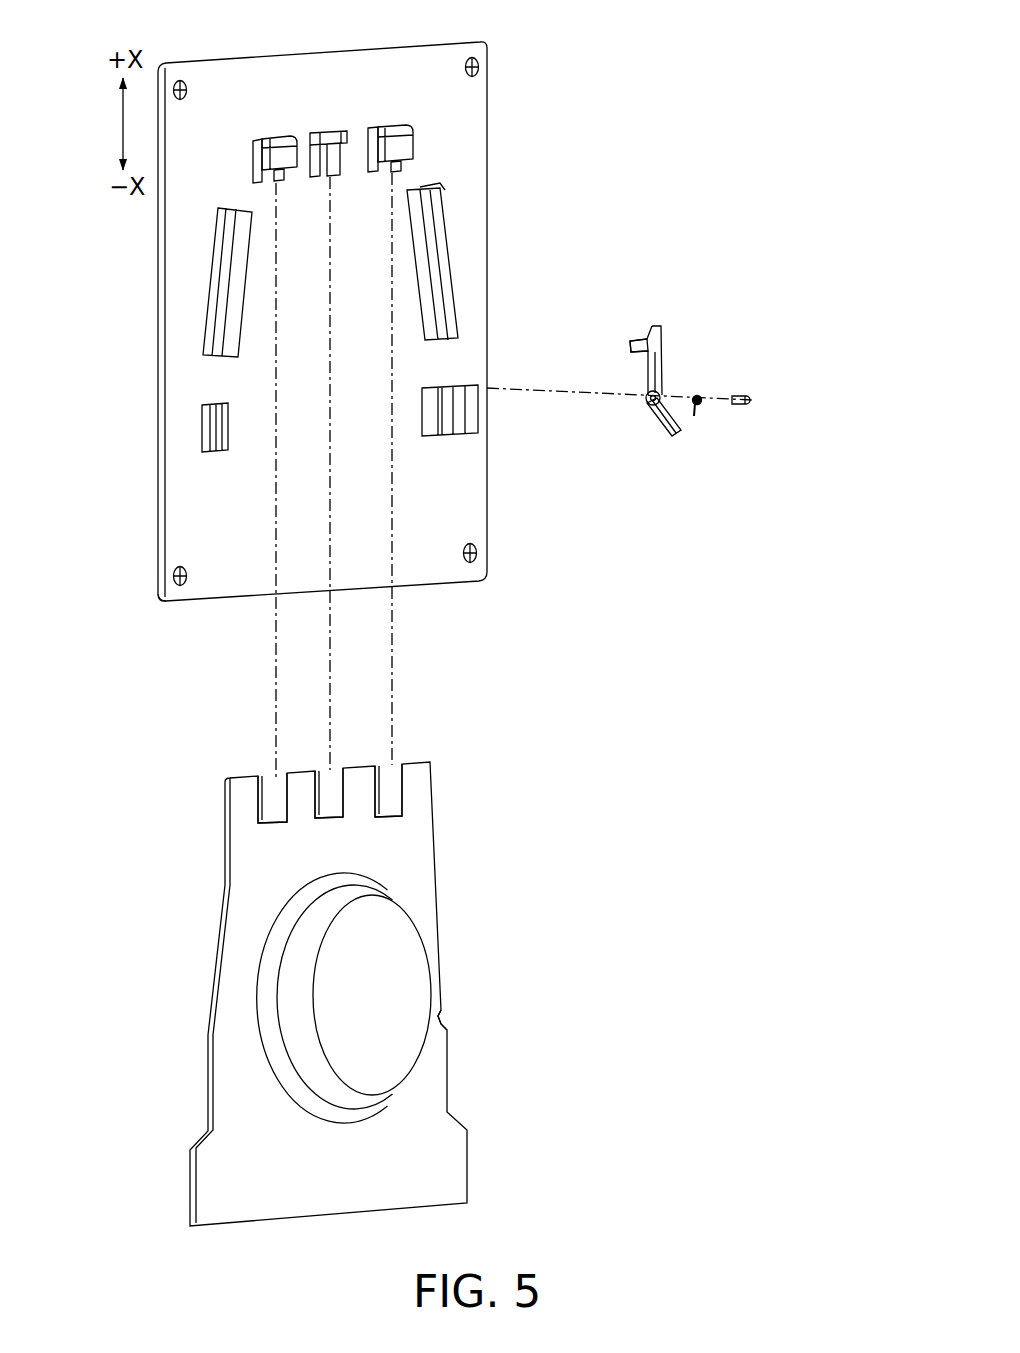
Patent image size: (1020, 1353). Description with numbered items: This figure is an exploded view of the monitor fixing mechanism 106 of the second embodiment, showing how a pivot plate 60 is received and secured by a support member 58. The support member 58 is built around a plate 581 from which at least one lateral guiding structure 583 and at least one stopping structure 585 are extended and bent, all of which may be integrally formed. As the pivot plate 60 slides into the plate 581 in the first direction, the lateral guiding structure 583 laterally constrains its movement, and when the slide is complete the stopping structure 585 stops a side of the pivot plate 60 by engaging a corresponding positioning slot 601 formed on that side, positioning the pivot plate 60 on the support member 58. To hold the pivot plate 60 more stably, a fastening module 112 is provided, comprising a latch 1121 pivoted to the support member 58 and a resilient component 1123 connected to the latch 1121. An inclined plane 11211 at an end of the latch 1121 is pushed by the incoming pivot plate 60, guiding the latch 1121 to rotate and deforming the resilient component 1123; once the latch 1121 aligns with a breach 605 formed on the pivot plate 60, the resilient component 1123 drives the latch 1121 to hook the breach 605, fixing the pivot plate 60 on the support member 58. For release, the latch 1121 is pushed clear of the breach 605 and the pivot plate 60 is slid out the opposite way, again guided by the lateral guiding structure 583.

The support member 58 is at (418, 390).
The plate 581 is at (470, 506).
The lateral guiding structure 583 is at (228, 262).
The stopping structure 585 is at (272, 140).
The monitor fixing mechanism 106 is at (595, 604).
The fastening module 112 is at (671, 447).
The latch 1121 is at (632, 418).
The inclined plane 11211 is at (628, 346).
The resilient component 1123 is at (700, 410).
The pivot plate 60 is at (362, 944).
The positioning slot 601 is at (263, 773).
The breach 605 is at (450, 1024).